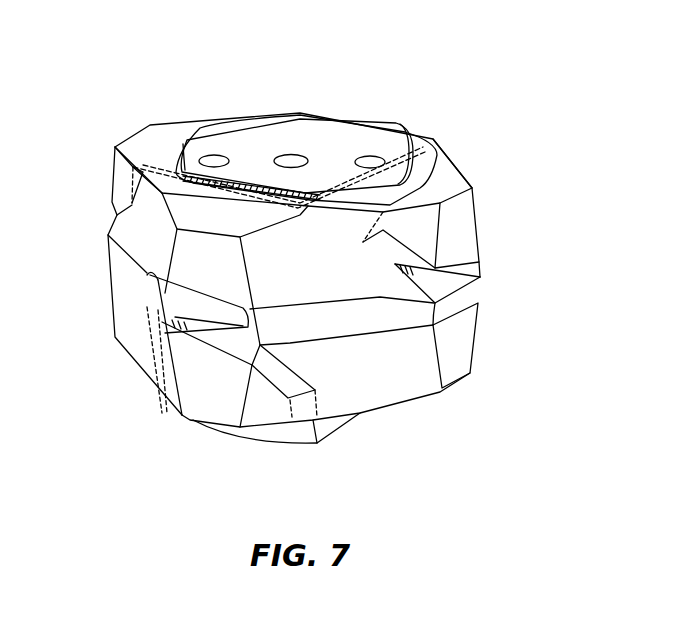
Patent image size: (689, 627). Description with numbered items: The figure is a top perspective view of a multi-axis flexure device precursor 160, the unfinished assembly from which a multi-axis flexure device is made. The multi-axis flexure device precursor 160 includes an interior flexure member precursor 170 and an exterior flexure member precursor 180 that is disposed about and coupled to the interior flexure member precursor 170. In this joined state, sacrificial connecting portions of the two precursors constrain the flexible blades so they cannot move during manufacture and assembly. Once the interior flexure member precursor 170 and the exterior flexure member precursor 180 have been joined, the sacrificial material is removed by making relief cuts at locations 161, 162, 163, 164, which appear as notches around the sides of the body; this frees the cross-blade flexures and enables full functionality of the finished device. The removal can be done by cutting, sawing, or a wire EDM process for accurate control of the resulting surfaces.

The multi-axis flexure device precursor 160 is at (148, 80).
The interior flexure member precursor 170 is at (417, 80).
The relief cut location 162 is at (422, 151).
The exterior flexure member precursor 180 is at (500, 134).
The relief cut location 161 is at (388, 228).
The relief cut location 163 is at (320, 401).
The relief cut location 164 is at (141, 364).